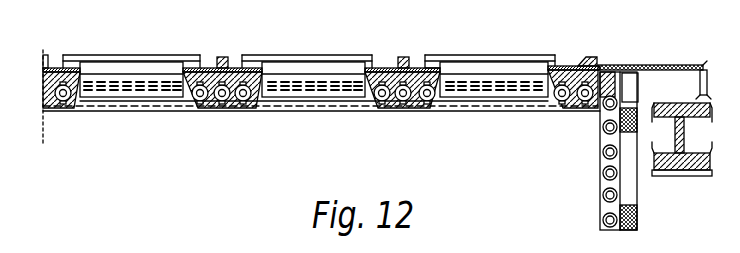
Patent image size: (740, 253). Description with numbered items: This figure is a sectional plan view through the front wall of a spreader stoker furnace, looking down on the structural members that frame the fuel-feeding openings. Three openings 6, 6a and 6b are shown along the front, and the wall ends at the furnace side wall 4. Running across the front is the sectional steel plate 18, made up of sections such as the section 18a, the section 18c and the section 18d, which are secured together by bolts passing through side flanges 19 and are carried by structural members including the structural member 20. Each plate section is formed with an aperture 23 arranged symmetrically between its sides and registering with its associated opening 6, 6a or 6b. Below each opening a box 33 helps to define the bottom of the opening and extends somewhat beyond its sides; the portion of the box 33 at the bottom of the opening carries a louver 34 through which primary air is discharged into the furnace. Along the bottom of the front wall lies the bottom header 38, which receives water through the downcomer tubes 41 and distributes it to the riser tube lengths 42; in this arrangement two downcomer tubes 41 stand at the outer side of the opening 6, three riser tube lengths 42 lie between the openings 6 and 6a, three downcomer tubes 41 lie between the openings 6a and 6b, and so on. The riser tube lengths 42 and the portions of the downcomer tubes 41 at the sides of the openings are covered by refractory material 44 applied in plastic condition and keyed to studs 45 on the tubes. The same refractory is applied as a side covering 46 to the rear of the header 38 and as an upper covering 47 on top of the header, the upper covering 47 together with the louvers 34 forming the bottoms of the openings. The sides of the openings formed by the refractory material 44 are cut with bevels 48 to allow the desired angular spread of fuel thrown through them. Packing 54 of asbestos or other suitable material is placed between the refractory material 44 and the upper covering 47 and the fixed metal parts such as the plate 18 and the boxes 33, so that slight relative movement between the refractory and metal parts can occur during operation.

The side wall 4 is at (604, 160).
The opening 6 is at (541, 70).
The opening 6a is at (333, 70).
The opening 6b is at (95, 70).
The steel plate 18 is at (587, 62).
The plate section 18a is at (655, 65).
The plate section 18c is at (403, 58).
The plate section 18d is at (221, 58).
The side flange 19 is at (45, 60).
The structural member 20 is at (701, 84).
The aperture 23 is at (188, 67).
The box 33 is at (113, 75).
The louver 34 is at (150, 84).
The bottom header 38 is at (520, 100).
The downcomer tube 41 is at (222, 104).
The riser tube length 42 is at (50, 109).
The refractory material 44 is at (616, 84).
The stud 45 is at (263, 97).
The side covering 46 is at (147, 110).
The upper covering 47 is at (352, 100).
The bevel 48 is at (64, 108).
The packing 54 is at (426, 56).